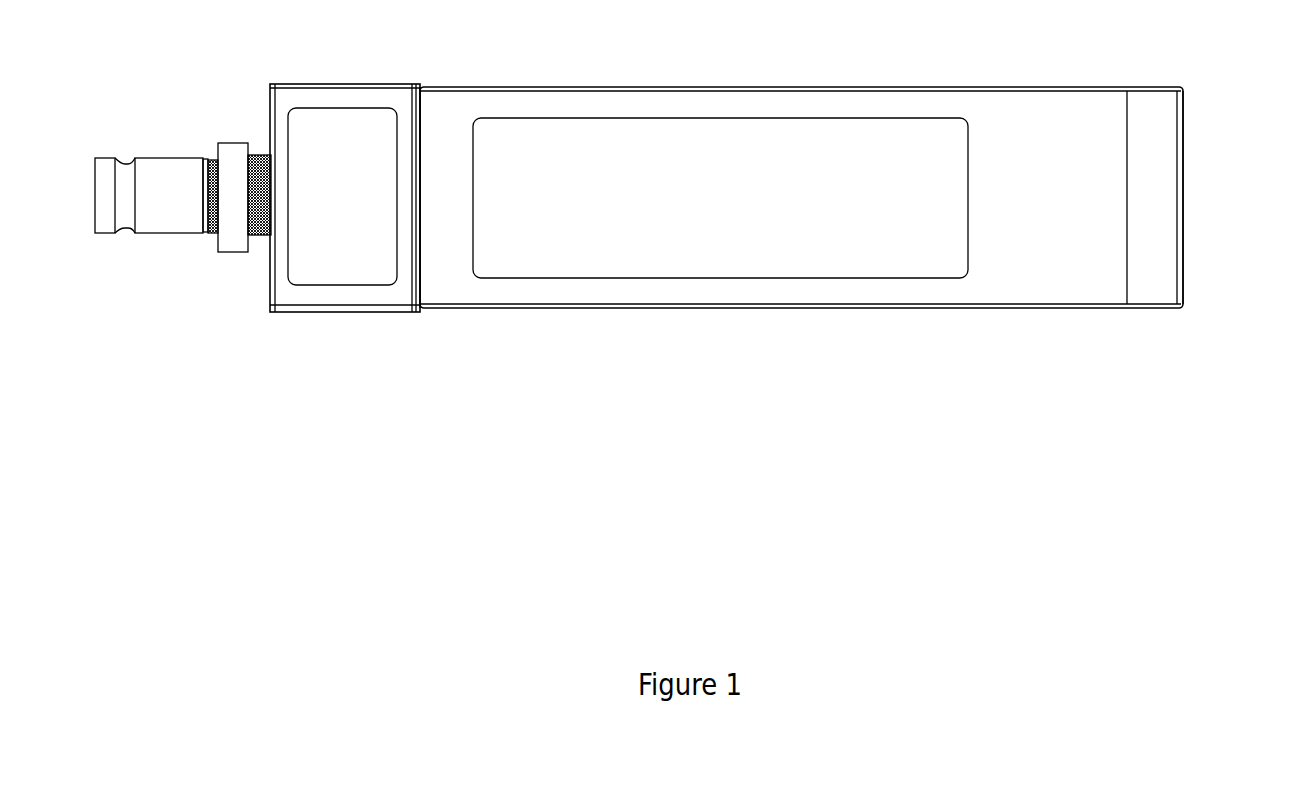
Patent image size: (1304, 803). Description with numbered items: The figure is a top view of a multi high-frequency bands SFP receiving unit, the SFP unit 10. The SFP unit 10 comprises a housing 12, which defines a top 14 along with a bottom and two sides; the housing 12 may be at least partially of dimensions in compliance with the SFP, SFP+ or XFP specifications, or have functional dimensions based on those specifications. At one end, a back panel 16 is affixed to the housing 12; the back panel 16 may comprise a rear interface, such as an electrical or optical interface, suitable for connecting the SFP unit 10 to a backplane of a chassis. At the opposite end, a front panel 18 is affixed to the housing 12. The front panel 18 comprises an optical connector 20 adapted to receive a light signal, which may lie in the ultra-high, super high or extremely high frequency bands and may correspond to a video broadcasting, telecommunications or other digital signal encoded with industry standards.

The SFP unit 10 is at (996, 65).
The housing 12 is at (880, 313).
The top 14 is at (687, 242).
The back panel 16 is at (1187, 203).
The front panel 18 is at (282, 298).
The optical connector 20 is at (177, 203).